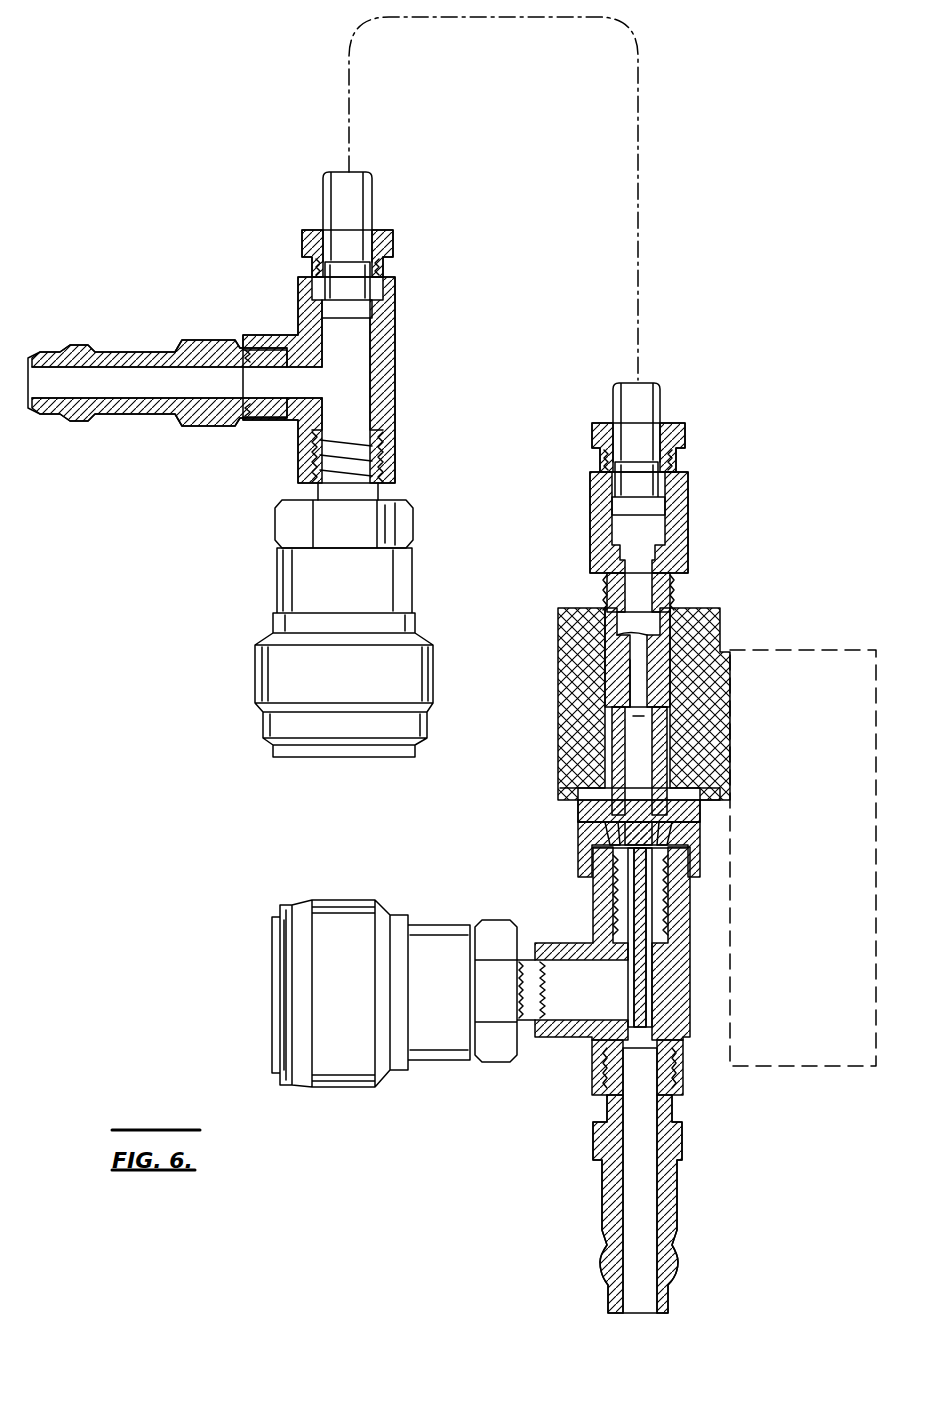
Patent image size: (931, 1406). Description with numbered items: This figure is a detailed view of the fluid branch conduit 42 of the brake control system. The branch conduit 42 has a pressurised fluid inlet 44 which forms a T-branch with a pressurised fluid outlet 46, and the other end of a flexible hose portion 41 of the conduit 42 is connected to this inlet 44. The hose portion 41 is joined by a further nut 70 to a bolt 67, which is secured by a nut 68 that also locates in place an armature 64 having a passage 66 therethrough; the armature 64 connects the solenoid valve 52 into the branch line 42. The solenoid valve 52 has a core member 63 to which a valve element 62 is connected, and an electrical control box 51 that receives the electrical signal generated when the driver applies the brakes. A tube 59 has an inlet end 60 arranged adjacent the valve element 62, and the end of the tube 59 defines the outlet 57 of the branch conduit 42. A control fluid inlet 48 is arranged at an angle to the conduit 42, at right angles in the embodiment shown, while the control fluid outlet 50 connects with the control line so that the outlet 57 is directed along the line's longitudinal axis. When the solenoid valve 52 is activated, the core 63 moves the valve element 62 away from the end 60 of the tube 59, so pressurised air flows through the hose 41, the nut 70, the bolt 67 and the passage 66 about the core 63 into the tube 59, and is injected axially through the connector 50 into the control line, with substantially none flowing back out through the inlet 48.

The flexible hose portion 41 is at (335, 217).
The fluid branch conduit 42 is at (641, 228).
The pressurised fluid inlet 44 is at (165, 422).
The pressurised fluid outlet 46 is at (262, 663).
The control fluid inlet 48 is at (438, 1035).
The control fluid outlet 50 is at (680, 1132).
The control box 51 is at (820, 898).
The solenoid valve 52 is at (570, 628).
The outlet 57 is at (677, 1065).
The tube 59 is at (657, 977).
The inlet end 60 is at (630, 865).
The valve element 62 is at (590, 823).
The core member 63 is at (583, 742).
The armature 64 is at (660, 653).
The passage 66 is at (642, 773).
The bolt 67 is at (677, 535).
The nut 68 is at (668, 603).
The further nut 70 is at (678, 438).